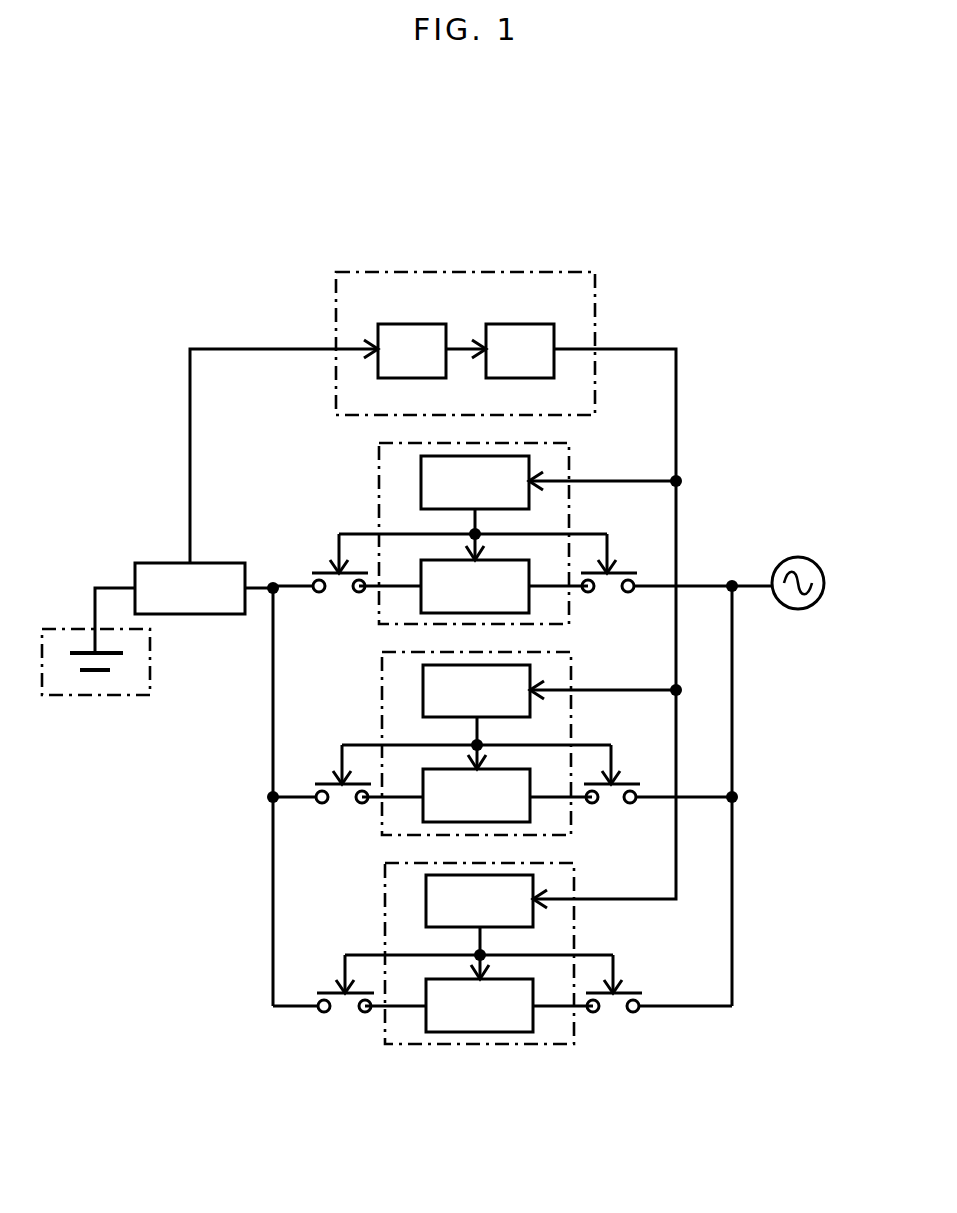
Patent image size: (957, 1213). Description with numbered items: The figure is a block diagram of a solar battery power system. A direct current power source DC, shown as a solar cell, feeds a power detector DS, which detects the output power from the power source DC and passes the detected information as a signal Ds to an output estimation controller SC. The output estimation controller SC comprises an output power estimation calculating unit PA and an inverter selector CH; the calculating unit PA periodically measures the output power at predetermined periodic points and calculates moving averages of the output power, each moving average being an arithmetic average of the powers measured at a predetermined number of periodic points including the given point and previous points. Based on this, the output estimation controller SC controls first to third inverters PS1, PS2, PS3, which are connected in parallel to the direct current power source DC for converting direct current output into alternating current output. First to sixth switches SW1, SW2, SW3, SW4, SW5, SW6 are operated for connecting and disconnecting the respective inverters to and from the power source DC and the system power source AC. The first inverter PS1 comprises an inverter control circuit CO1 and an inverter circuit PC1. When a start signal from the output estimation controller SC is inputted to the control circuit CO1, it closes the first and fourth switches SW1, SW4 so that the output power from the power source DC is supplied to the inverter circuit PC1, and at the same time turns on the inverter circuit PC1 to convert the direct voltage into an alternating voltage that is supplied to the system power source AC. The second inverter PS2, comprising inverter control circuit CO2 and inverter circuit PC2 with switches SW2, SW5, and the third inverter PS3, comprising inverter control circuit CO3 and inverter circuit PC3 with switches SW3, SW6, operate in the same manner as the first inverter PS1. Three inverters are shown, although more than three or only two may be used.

The digital signal input Ds is at (284, 443).
The output estimation controller SC is at (440, 343).
The output power estimation calculating unit PA is at (412, 351).
The inverter selector CH is at (500, 351).
The power detector DS is at (204, 588).
The direct current power source DC is at (96, 641).
The system power source AC is at (778, 601).
The first inverter PS1 is at (450, 533).
The second inverter PS2 is at (450, 743).
The third inverter PS3 is at (453, 953).
The inverter control circuit CO1 is at (473, 498).
The inverter control circuit CO2 is at (476, 708).
The inverter control circuit CO3 is at (479, 918).
The inverter circuit PC1 is at (473, 573).
The inverter circuit PC2 is at (477, 783).
The inverter circuit PC3 is at (479, 993).
The first switch SW1 is at (320, 578).
The second switch SW2 is at (322, 789).
The third switch SW3 is at (323, 998).
The fourth switch SW4 is at (656, 578).
The fifth switch SW5 is at (658, 789).
The sixth switch SW6 is at (659, 998).